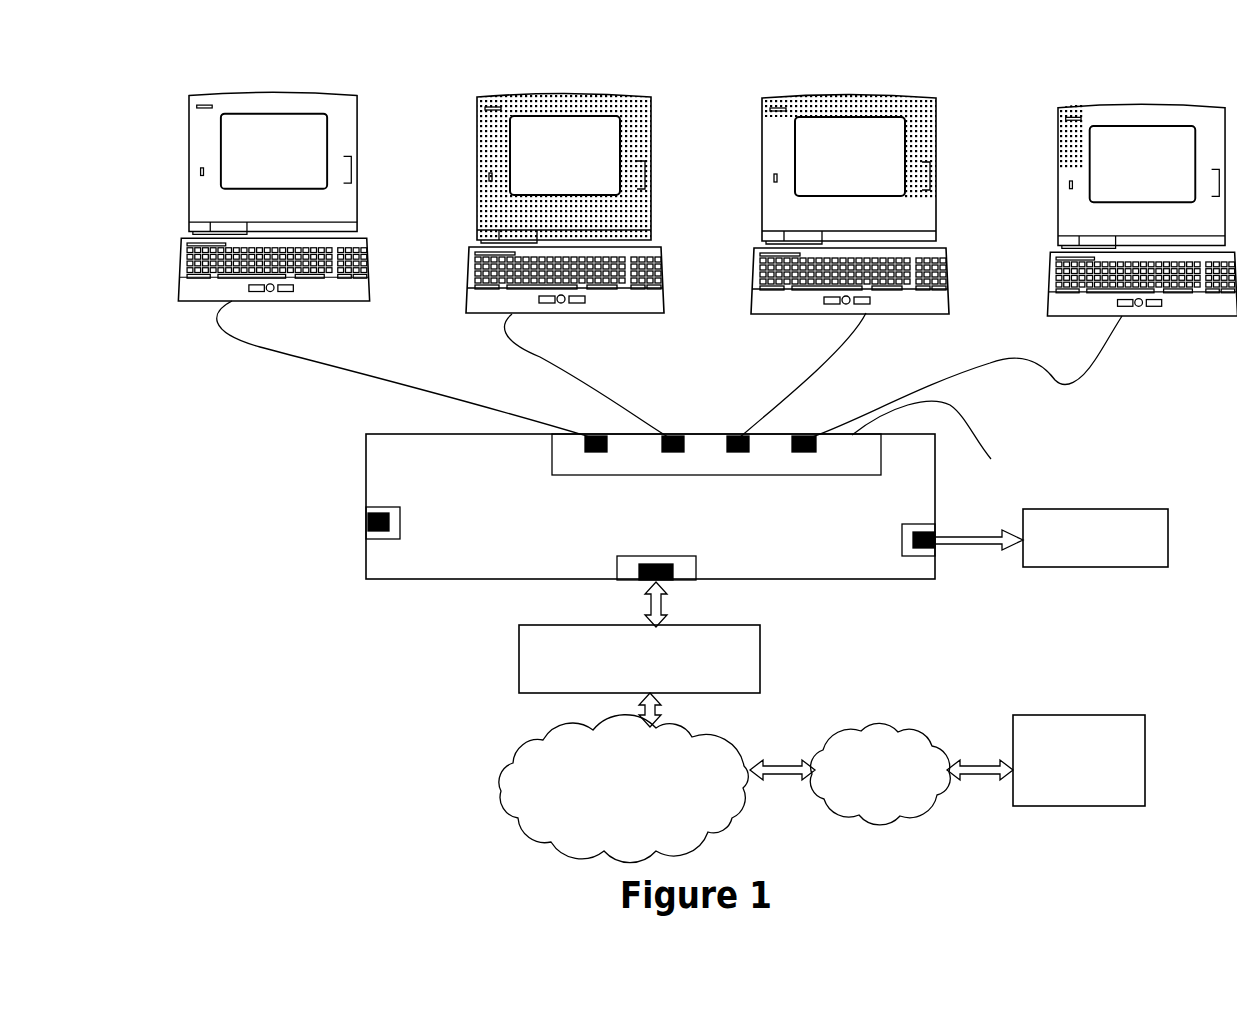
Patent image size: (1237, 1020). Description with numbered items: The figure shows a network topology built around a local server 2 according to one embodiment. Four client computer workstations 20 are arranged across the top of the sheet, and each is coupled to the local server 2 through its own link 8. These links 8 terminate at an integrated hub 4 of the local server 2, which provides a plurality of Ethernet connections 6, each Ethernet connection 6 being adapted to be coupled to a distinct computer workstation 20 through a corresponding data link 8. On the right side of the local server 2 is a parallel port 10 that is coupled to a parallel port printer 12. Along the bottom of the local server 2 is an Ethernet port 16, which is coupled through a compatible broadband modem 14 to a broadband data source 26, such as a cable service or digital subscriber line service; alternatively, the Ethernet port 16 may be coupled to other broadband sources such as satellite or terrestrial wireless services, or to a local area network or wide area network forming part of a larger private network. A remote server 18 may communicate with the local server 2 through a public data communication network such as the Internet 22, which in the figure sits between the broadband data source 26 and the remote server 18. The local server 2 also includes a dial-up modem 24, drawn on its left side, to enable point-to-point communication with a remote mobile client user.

The local server 2 is at (366, 568).
The integrated hub 4 is at (991, 459).
The Ethernet connections 6 is at (596, 437).
The links 8 is at (303, 357).
The parallel port 10 is at (935, 525).
The parallel port printer 12 is at (1100, 515).
The broadband modem 14 is at (518, 648).
The Ethernet port 16 is at (683, 582).
The remote server 18 is at (1113, 716).
The client computer workstations 20 is at (270, 88).
The Internet 22 is at (893, 737).
The dial-up modem 24 is at (388, 515).
The broadband data source 26 is at (518, 758).